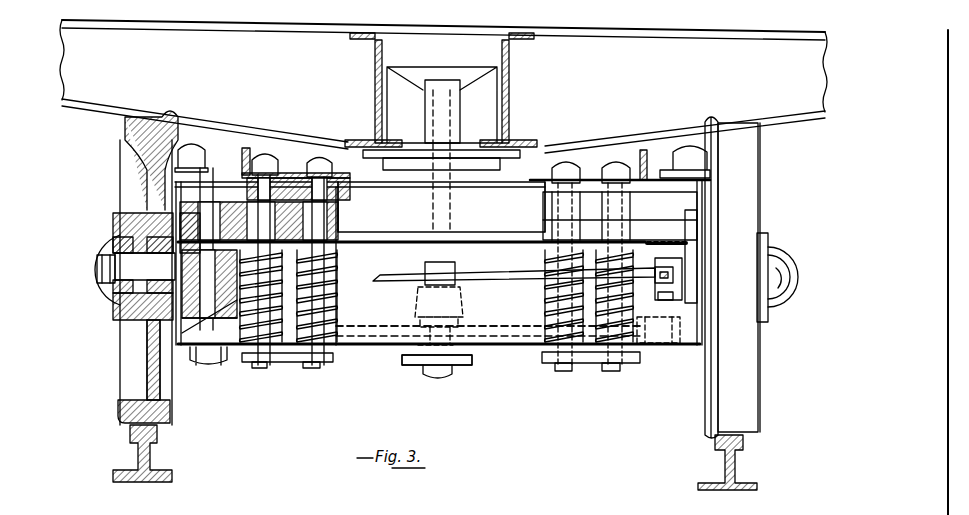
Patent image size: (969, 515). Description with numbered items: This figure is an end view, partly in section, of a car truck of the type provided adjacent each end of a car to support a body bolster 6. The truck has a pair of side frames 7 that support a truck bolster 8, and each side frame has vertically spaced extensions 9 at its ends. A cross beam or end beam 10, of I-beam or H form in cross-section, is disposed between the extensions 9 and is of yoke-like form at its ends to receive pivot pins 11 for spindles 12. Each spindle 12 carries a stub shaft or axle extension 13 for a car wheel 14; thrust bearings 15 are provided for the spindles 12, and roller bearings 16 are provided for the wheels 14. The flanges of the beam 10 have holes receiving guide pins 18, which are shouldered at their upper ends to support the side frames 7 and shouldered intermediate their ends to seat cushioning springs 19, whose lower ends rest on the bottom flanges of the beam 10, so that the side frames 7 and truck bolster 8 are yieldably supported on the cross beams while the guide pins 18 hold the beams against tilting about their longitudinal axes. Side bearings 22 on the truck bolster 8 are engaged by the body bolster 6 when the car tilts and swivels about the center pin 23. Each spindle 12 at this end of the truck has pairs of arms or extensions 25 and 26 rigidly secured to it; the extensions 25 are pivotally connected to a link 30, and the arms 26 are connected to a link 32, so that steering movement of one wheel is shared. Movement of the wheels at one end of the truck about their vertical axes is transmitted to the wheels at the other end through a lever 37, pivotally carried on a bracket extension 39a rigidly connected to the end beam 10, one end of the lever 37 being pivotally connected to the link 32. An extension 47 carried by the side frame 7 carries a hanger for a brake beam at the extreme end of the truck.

The body bolster 6 is at (577, 48).
The side frame 7 is at (340, 205).
The truck bolster 8 is at (383, 167).
The extension 9 is at (246, 188).
The cross beam 10 is at (386, 237).
The pivot pin 11 is at (188, 212).
The spindle 12 is at (132, 338).
The stub shaft or axle extension 13 is at (110, 298).
The car wheel 14 is at (738, 171).
The thrust bearing 15 is at (213, 200).
The roller bearing 16 is at (155, 243).
The guide pin 18 is at (299, 156).
The cushioning spring 19 is at (332, 270).
The side bearing 22 is at (190, 148).
The center pin 23 is at (445, 100).
The arm or extension 25 is at (674, 278).
The arm 26 is at (684, 356).
The link 30 is at (497, 276).
The link 32 is at (490, 326).
The lever 37 is at (416, 297).
The bracket extension 39a is at (463, 362).
The extension 47 is at (245, 147).